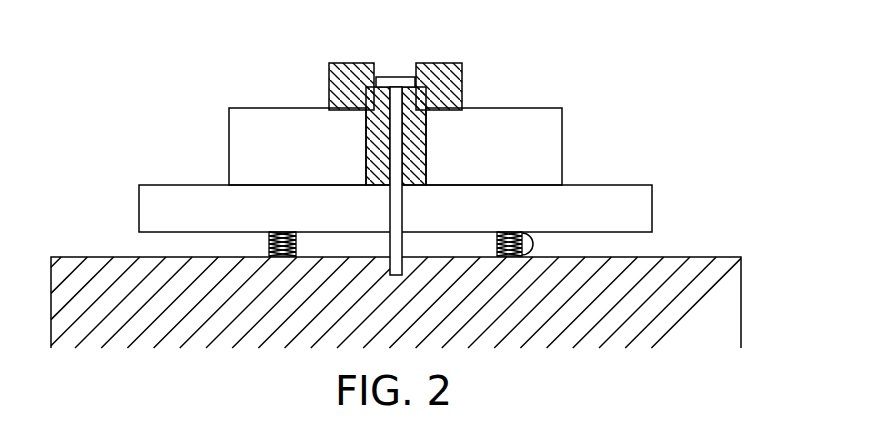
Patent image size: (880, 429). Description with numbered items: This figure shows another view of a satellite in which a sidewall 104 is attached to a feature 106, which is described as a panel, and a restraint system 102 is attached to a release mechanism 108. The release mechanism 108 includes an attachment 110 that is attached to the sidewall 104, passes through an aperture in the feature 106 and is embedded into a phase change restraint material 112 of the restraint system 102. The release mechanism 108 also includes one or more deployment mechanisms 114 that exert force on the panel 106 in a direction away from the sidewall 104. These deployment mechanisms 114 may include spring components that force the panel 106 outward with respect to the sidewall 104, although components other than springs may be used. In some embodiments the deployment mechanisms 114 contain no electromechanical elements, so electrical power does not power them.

The restraint system 102 is at (563, 130).
The sidewall 104 is at (93, 262).
The feature 106 is at (654, 207).
The release mechanism 108 is at (537, 245).
The attachment 110 is at (388, 215).
The phase change restraint material 112 is at (462, 84).
The deployment mechanisms 114 is at (265, 242).